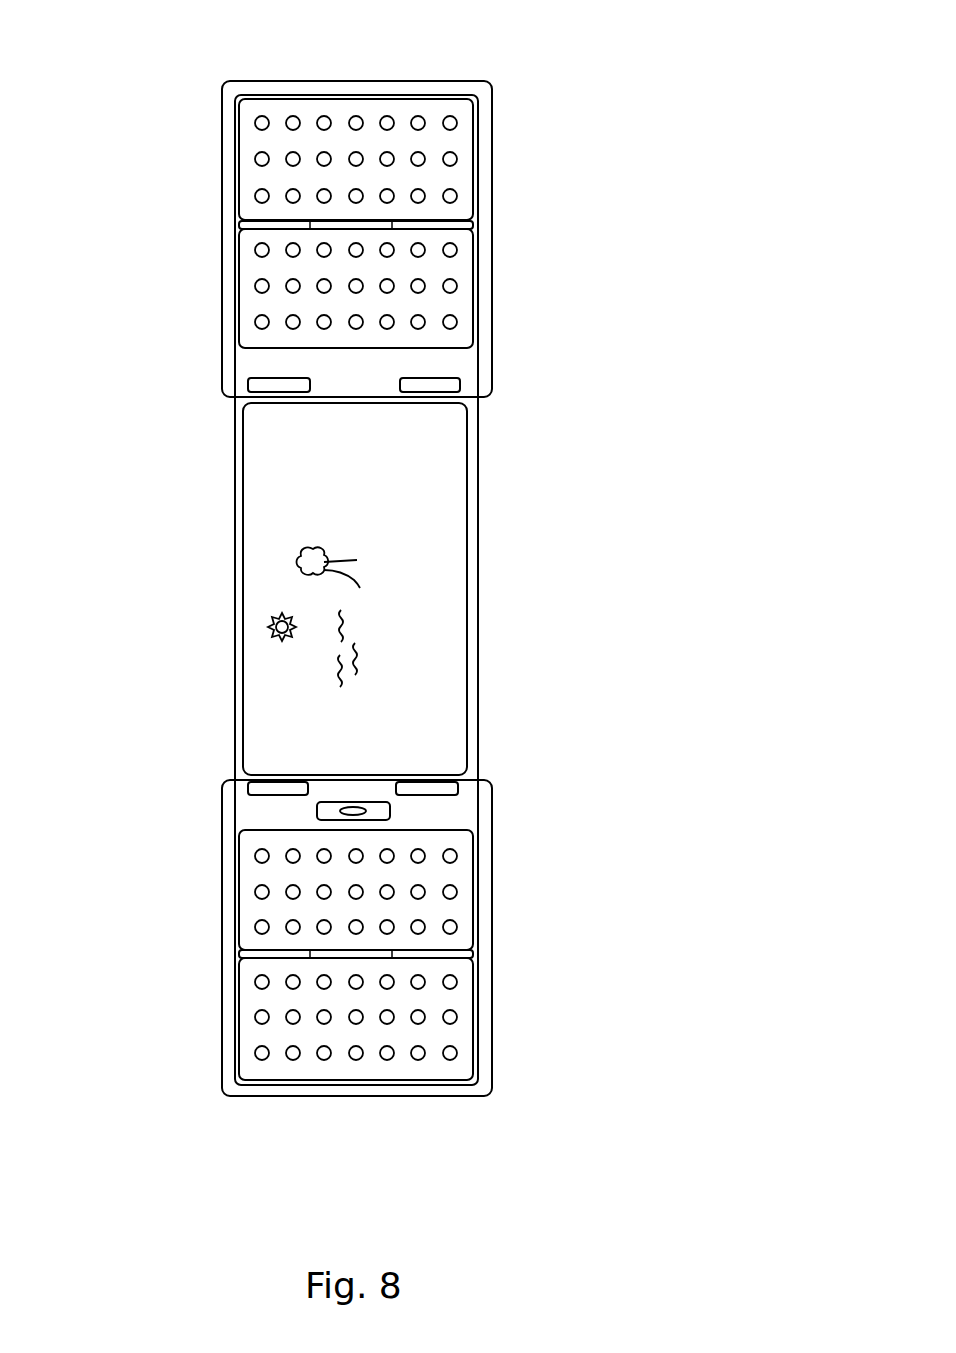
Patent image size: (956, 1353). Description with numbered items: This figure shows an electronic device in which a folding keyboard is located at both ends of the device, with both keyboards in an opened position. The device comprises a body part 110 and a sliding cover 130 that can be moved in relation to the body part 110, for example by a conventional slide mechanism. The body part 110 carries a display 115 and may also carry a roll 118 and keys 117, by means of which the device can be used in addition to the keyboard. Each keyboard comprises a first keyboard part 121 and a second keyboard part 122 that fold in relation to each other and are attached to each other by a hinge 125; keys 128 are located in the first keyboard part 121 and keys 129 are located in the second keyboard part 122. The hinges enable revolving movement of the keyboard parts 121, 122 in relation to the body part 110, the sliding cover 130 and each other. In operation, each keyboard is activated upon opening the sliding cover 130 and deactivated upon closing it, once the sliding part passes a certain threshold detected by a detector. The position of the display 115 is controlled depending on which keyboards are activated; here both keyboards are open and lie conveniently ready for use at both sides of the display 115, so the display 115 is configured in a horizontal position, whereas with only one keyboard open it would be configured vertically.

The body part 110 is at (478, 608).
The display 115 is at (430, 540).
The keys 117 is at (248, 386).
The roll 118 is at (356, 803).
The first keyboard part 121 is at (248, 172).
The second keyboard part 122 is at (248, 295).
The hinge 125 is at (448, 220).
The keys 128 is at (327, 117).
The keys 129 is at (457, 285).
The sliding cover 130 is at (492, 83).